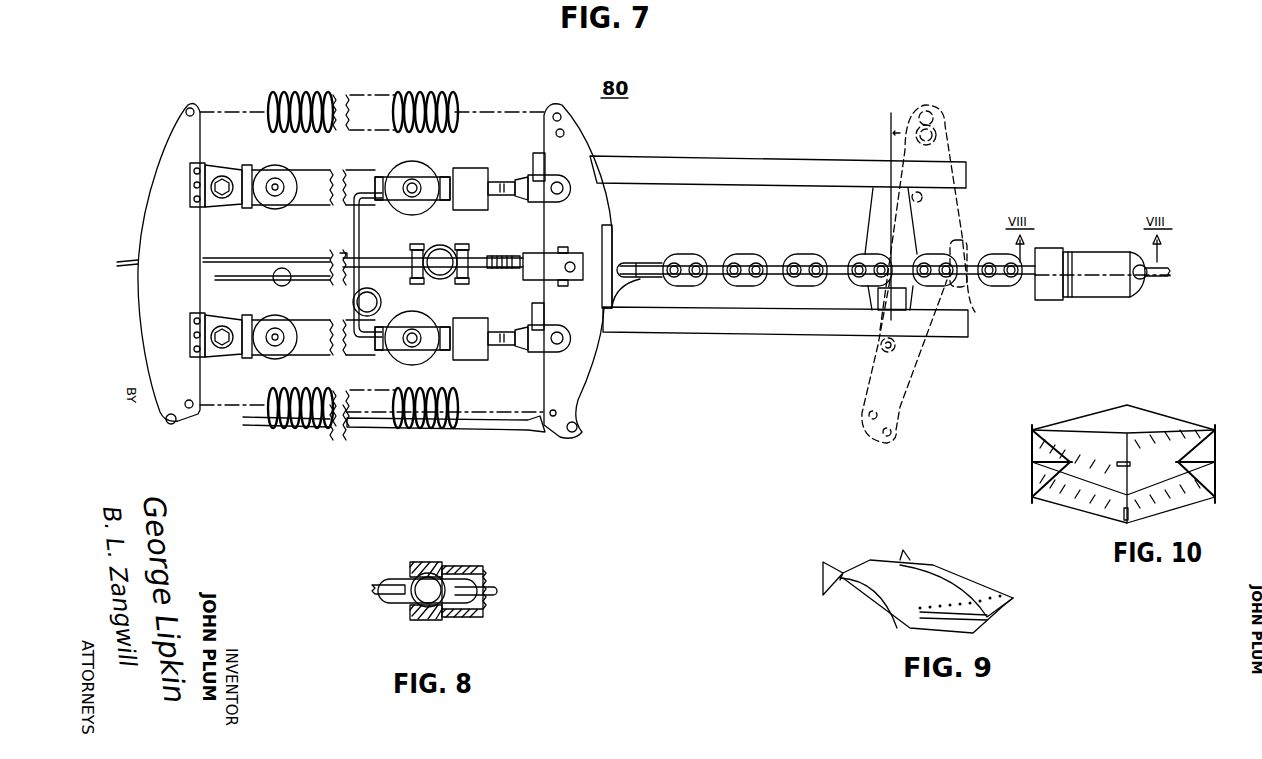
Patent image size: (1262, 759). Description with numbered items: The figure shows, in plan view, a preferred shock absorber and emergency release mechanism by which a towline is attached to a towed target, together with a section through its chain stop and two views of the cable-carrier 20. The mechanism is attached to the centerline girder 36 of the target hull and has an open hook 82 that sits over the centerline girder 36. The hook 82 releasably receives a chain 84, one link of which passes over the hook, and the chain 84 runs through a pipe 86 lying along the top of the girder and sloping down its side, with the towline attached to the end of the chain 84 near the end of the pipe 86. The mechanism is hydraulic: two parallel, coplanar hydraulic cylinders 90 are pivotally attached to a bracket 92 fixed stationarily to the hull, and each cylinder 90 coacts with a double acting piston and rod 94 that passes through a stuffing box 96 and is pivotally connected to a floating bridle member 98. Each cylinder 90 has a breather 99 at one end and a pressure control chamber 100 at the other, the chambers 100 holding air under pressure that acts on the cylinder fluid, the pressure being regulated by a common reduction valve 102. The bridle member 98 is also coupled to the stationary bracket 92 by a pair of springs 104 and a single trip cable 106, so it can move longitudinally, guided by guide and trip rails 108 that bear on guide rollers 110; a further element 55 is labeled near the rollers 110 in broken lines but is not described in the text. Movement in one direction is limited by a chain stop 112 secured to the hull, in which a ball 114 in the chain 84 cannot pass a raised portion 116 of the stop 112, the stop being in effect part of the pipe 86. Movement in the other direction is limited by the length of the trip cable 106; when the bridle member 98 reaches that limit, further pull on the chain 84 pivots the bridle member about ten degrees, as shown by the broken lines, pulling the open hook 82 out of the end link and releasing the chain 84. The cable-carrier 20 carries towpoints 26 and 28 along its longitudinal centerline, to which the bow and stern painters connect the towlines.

In FIG. 9, the cable-carrier 20 is at (983, 558).
In FIG. 10, the cable-carrier 20 is at (1190, 412).
In FIG. 10, the towpoint 26 is at (1122, 517).
In FIG. 10, the towpoint 28 is at (1135, 452).
In FIG. 7, the centerline girder 36 is at (120, 266).
In FIG. 7, the bracket 55 is at (965, 200).
In FIG. 7, the open hook 82 is at (630, 290).
In FIG. 7, the chain 84 is at (752, 258).
In FIG. 8, the chain 84 is at (497, 592).
In FIG. 7, the pipe 86 is at (1125, 298).
In FIG. 8, the pipe 86 is at (452, 571).
In FIG. 7, the hydraulic cylinder 90 is at (313, 262).
In FIG. 7, the bracket 92 is at (169, 264).
In FIG. 7, the piston and rod 94 is at (493, 183).
In FIG. 7, the stuffing box 96 is at (470, 264).
In FIG. 7, the floating bridle member 98 is at (583, 357).
In FIG. 7, the breather 99 is at (277, 205).
In FIG. 7, the pressure control chamber 100 is at (418, 172).
In FIG. 7, the reduction valve 102 is at (285, 286).
In FIG. 7, the spring 104 is at (320, 80).
In FIG. 7, the trip cable 106 is at (468, 432).
In FIG. 7, the guide and trip rail 108 is at (758, 157).
In FIG. 7, the guide roller 110 is at (947, 135).
In FIG. 7, the chain stop 112 is at (1047, 300).
In FIG. 8, the chain stop 112 is at (427, 629).
In FIG. 8, the ball 114 is at (418, 594).
In FIG. 8, the raised portion 116 is at (432, 566).